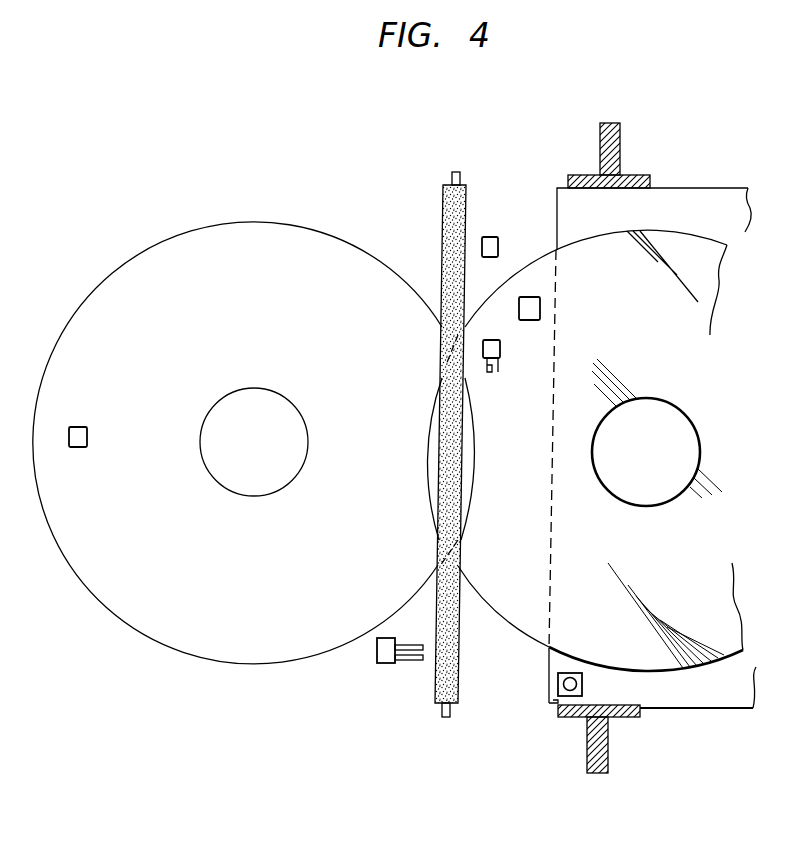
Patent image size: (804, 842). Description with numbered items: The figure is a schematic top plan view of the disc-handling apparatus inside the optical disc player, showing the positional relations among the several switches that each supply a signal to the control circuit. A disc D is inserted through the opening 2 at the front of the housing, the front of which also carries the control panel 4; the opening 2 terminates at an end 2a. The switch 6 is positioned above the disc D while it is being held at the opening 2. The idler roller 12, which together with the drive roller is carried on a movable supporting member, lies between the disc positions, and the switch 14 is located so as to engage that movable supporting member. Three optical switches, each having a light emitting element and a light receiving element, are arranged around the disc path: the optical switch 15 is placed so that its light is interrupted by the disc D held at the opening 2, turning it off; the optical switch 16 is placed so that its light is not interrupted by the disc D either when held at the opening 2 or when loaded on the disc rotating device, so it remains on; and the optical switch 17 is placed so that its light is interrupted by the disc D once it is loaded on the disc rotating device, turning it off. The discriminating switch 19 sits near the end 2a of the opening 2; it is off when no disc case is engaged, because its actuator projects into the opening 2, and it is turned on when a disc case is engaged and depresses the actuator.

The opening 2 is at (628, 703).
The end of the opening 2a is at (553, 705).
The control panel 4 is at (620, 140).
The switch 6 is at (500, 350).
The idler roller 12 is at (443, 205).
The switch 14 is at (383, 663).
The optical switch 15 is at (540, 309).
The optical switch 16 is at (490, 237).
The optical switch 17 is at (78, 427).
The discriminating switch 19 is at (558, 691).
The disc D is at (137, 633).